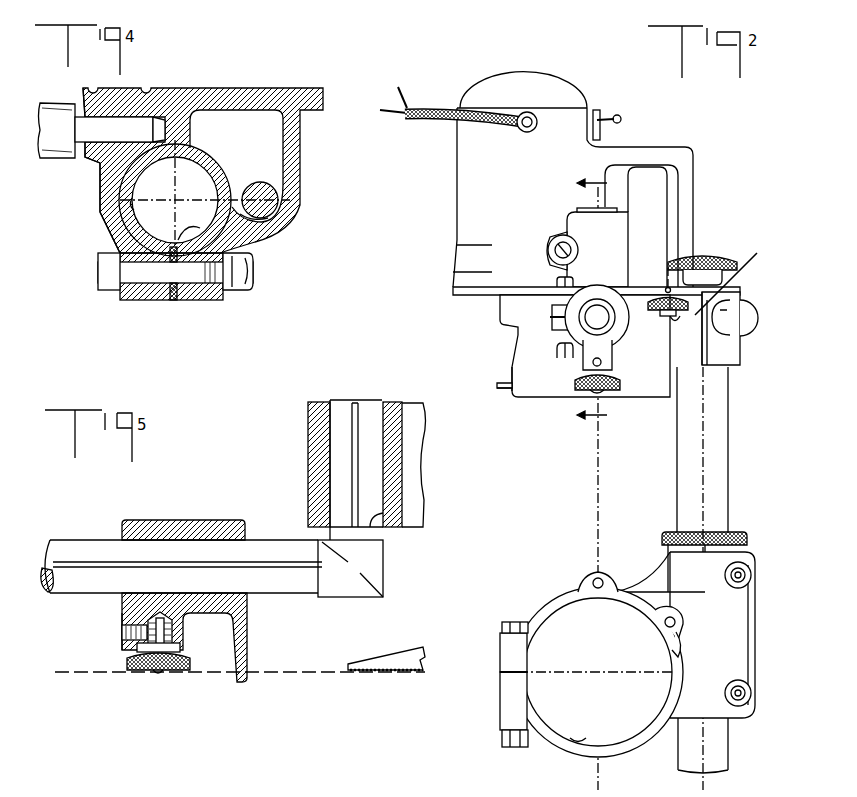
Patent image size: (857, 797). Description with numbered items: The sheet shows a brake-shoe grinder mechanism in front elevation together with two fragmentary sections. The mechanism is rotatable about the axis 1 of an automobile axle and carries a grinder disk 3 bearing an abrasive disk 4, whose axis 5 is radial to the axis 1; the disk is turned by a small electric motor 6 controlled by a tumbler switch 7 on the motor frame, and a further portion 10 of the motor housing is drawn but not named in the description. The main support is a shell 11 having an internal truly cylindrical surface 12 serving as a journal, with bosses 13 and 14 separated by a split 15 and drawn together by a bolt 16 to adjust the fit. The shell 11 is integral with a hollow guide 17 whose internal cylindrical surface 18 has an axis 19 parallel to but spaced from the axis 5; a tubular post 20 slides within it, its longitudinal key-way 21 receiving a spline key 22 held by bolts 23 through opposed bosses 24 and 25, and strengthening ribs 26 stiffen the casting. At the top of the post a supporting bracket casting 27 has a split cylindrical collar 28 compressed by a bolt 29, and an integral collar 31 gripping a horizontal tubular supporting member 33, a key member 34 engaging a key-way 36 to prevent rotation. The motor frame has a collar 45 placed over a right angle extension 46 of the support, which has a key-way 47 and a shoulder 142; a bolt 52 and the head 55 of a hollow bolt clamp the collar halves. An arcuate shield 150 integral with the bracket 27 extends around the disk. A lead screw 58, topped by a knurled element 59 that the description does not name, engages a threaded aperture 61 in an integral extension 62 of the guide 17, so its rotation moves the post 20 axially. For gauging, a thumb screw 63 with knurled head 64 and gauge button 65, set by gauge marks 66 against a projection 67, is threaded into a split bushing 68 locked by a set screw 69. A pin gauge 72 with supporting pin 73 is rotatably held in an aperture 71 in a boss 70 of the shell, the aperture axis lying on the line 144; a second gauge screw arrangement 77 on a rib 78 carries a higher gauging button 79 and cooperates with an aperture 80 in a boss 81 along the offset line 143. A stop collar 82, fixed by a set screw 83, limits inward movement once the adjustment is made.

In FIG. 2, the axis 1 is at (597, 677).
In FIG. 5, the grinder disk 3 is at (393, 657).
In FIG. 2, the grinder disk 3 is at (505, 383).
In FIG. 5, the abrasive disk 4 is at (400, 673).
In FIG. 2, the abrasive disk 4 is at (500, 388).
In FIG. 2, the axis 5 is at (597, 237).
In FIG. 2, the electric motor 6 is at (533, 87).
In FIG. 2, the tumbler switch 7 is at (600, 113).
In FIG. 2, the housing 10 is at (687, 190).
In FIG. 4, the shell 11 is at (313, 107).
In FIG. 2, the shell 11 is at (647, 733).
In FIG. 2, the cylindrical surface 12 is at (573, 740).
In FIG. 2, the boss 13 is at (507, 645).
In FIG. 2, the boss 14 is at (512, 707).
In FIG. 2, the split 15 is at (500, 673).
In FIG. 2, the bolt 16 is at (520, 622).
In FIG. 4, the hollow guide 17 is at (102, 188).
In FIG. 2, the hollow guide 17 is at (723, 617).
In FIG. 4, the cylindrical surface 18 is at (130, 213).
In FIG. 4, the axis 19 is at (177, 198).
In FIG. 2, the axis 19 is at (707, 447).
In FIG. 4, the tubular post 20 is at (123, 172).
In FIG. 2, the tubular post 20 is at (715, 478).
In FIG. 4, the key-way 21 is at (212, 225).
In FIG. 4, the spline key 22 is at (172, 300).
In FIG. 2, the spline key 22 is at (747, 607).
In FIG. 4, the bolts 23 is at (103, 287).
In FIG. 2, the bolts 23 is at (748, 707).
In FIG. 4, the boss 24 is at (148, 287).
In FIG. 4, the boss 25 is at (220, 297).
In FIG. 2, the strengthening ribs 26 is at (638, 573).
In FIG. 2, the supporting bracket casting 27 is at (728, 292).
In FIG. 2, the split cylindrical collar 28 is at (742, 358).
In FIG. 2, the bolt 29 is at (755, 320).
In FIG. 5, the collar 31 is at (188, 533).
In FIG. 2, the collar 31 is at (620, 322).
In FIG. 5, the horizontal tubular supporting member 33 is at (262, 550).
In FIG. 2, the horizontal tubular supporting member 33 is at (608, 332).
In FIG. 2, the key member 34 is at (550, 318).
In FIG. 5, the key-way 36 is at (92, 560).
In FIG. 5, the collar 45 is at (315, 467).
In FIG. 2, the collar 45 is at (613, 243).
In FIG. 5, the right angle extension 46 is at (365, 415).
In FIG. 5, the key-way 47 is at (352, 410).
In FIG. 2, the bolt 52 is at (552, 240).
In FIG. 2, the head 55 is at (552, 258).
In FIG. 4, the lead screw 58 is at (280, 190).
In FIG. 2, the knurled knob 59 is at (717, 253).
In FIG. 4, the threaded aperture 61 is at (287, 208).
In FIG. 4, the extension 62 is at (277, 217).
In FIG. 5, the thumb screw 63 is at (137, 645).
In FIG. 5, the knurled head 64 is at (187, 667).
In FIG. 2, the knurled head 64 is at (587, 392).
In FIG. 5, the gauge button 65 is at (158, 673).
In FIG. 2, the gauge button 65 is at (595, 393).
In FIG. 5, the gauge marks 66 is at (130, 660).
In FIG. 5, the projection 67 is at (175, 638).
In FIG. 5, the bushing 68 is at (130, 613).
In FIG. 5, the set screw 69 is at (122, 630).
In FIG. 4, the boss 70 is at (87, 100).
In FIG. 2, the boss 70 is at (595, 572).
In FIG. 4, the aperture 71 is at (157, 127).
In FIG. 2, the aperture 71 is at (600, 572).
In FIG. 4, the pin gauge 72 is at (40, 103).
In FIG. 4, the supporting pin 73 is at (110, 127).
In FIG. 2, the gauge screw arrangement 77 is at (735, 278).
In FIG. 2, the rib 78 is at (646, 298).
In FIG. 2, the gauging button 79 is at (673, 316).
In FIG. 2, the aperture 80 is at (663, 622).
In FIG. 2, the boss 81 is at (677, 648).
In FIG. 2, the stop collar 82 is at (667, 537).
In FIG. 2, the set screw 83 is at (707, 540).
In FIG. 5, the shoulder 142 is at (382, 513).
In FIG. 2, the line 143 is at (668, 477).
In FIG. 2, the line 144 is at (598, 493).
In FIG. 5, the arcuate shield 150 is at (240, 650).
In FIG. 2, the arcuate shield 150 is at (523, 387).